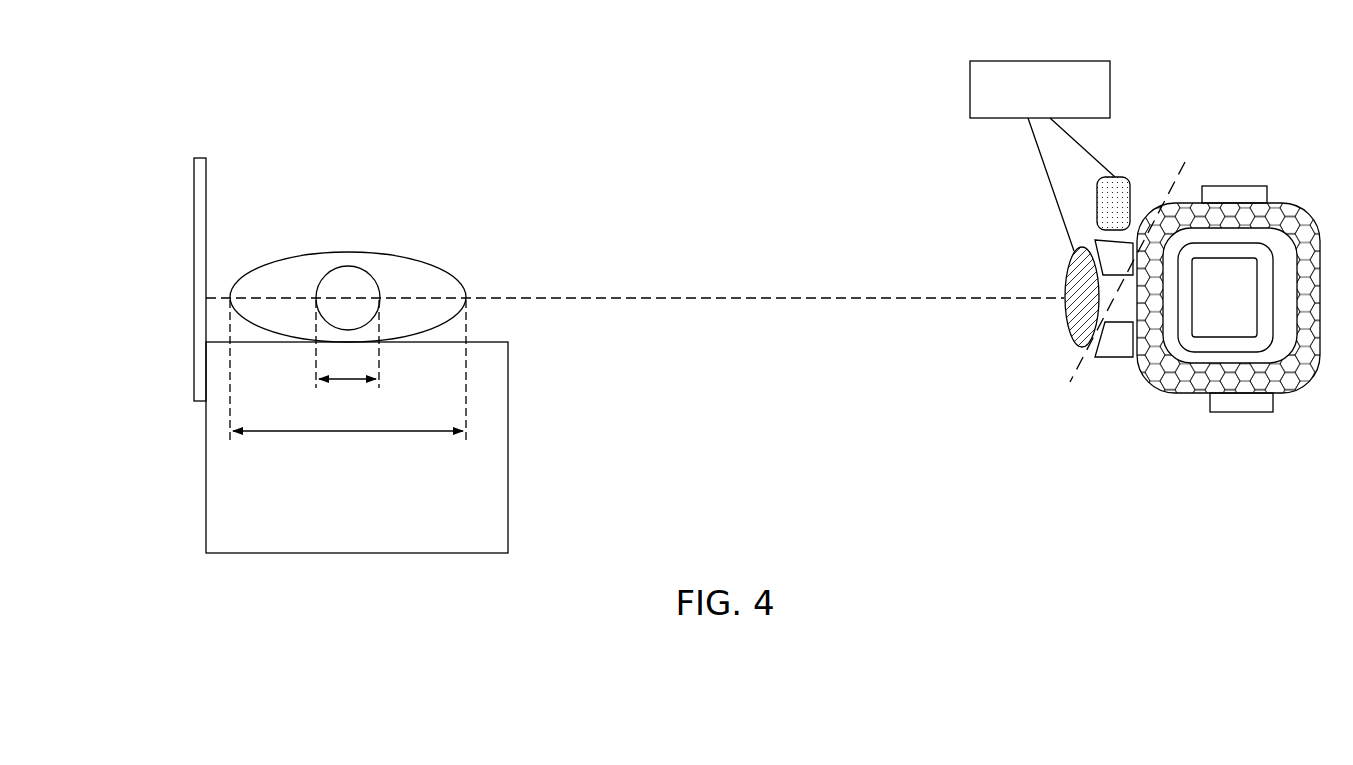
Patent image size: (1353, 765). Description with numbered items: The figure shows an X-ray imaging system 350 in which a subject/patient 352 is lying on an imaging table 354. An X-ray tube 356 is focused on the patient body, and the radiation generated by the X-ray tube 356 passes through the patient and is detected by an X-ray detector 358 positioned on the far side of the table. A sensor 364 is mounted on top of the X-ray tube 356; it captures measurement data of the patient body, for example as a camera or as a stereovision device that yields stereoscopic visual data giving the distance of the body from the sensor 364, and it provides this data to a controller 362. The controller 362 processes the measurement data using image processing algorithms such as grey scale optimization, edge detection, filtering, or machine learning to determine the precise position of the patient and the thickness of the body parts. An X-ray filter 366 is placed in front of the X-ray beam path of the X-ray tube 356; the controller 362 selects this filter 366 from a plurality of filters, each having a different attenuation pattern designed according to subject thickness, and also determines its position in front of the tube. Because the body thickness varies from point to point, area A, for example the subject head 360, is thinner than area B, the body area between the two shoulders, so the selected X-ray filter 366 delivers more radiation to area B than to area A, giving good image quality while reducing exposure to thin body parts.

The X-ray imaging system 350 is at (464, 60).
The subject/patient 352 is at (407, 249).
The imaging table 354 is at (510, 460).
The X-ray tube 356 is at (1240, 413).
The X-ray detector 358 is at (190, 202).
The subject head 360 is at (343, 290).
The controller 362 is at (1028, 58).
The sensor 364 is at (1132, 170).
The X-ray filter 366 is at (1064, 334).